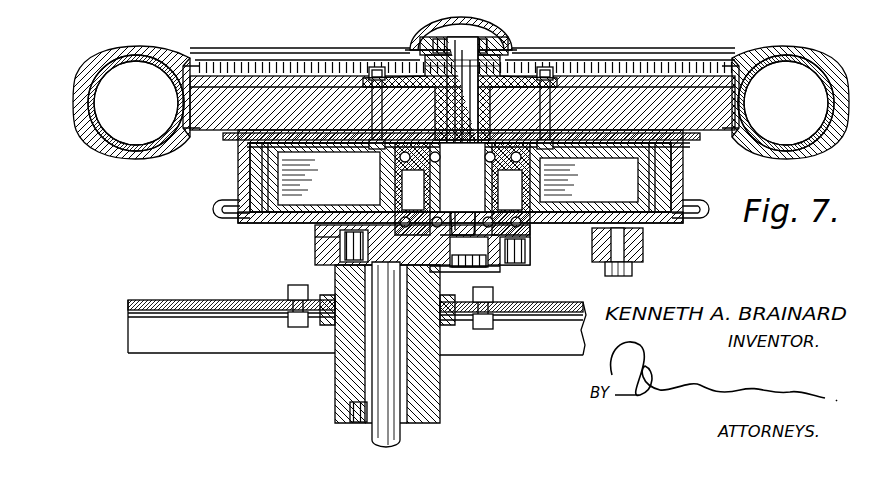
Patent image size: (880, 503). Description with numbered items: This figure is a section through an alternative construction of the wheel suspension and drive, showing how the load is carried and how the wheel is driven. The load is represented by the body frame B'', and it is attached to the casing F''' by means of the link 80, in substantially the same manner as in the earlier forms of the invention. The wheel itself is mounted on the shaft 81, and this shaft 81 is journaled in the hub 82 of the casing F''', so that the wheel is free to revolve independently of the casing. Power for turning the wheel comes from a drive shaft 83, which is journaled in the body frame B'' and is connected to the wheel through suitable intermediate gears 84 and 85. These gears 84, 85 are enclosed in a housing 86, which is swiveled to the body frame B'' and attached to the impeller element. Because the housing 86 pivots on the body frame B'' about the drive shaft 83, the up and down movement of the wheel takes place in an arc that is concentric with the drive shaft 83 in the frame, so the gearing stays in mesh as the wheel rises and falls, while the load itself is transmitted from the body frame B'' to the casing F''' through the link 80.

The shaft 81 is at (484, 86).
The hub 82 is at (503, 192).
The intermediate gear 84 is at (315, 227).
The housing 86 is at (315, 257).
The intermediate gear 85 is at (490, 253).
The link 80 is at (645, 248).
The drive shaft 83 is at (380, 388).
The casing F''' is at (453, 329).
The body frame B'' is at (357, 337).